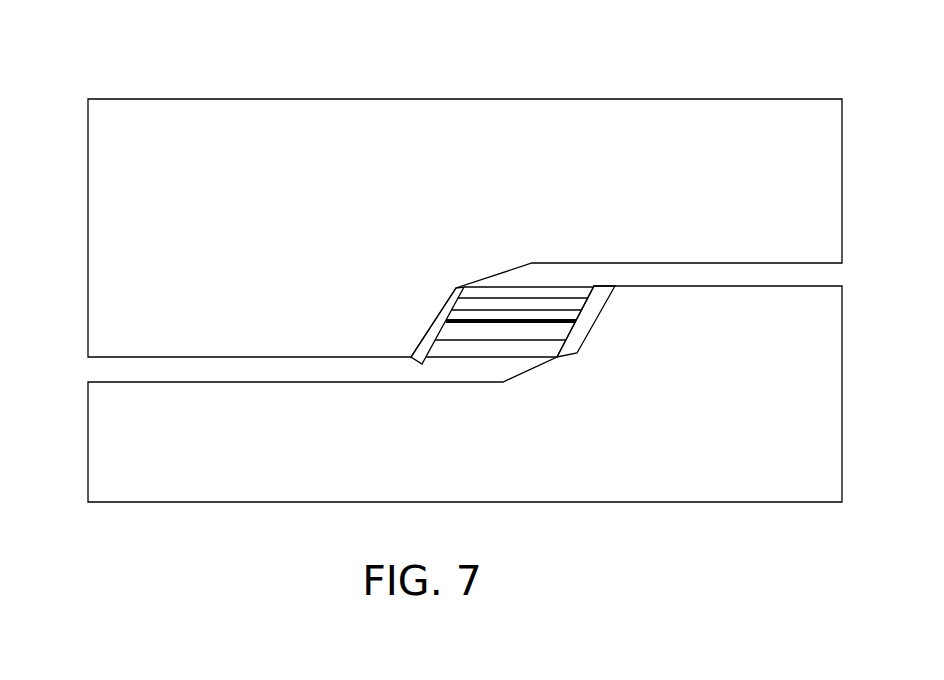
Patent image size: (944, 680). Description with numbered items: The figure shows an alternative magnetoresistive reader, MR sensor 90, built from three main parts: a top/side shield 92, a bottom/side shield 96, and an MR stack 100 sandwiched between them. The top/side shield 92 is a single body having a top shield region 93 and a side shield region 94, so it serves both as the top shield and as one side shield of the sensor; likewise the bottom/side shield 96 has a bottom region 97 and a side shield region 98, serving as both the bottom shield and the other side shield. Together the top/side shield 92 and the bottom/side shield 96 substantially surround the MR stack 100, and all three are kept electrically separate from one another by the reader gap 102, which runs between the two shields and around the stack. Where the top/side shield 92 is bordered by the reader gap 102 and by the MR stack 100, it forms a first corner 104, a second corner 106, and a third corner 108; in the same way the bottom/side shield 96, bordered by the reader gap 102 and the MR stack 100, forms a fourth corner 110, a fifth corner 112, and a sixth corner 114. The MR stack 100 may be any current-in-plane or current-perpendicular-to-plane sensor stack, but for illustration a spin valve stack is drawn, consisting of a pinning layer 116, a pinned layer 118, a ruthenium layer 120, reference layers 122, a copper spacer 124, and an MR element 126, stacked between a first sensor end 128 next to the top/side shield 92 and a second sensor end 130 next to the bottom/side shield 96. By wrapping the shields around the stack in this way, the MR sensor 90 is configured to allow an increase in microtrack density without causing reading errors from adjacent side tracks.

The MR sensor 90 is at (147, 82).
The top/side shield 92 is at (270, 99).
The top shield region 93 is at (722, 157).
The side shield region 94 is at (285, 312).
The bottom/side shield 96 is at (635, 502).
The bottom region 97 is at (517, 463).
The side shield region 98 is at (703, 326).
The MR stack 100 is at (536, 338).
The reader gap 102 is at (832, 275).
The first corner 104 is at (411, 354).
The second corner 106 is at (457, 287).
The third corner 108 is at (532, 262).
The fourth corner 110 is at (616, 287).
The fifth corner 112 is at (557, 357).
The sixth corner 114 is at (503, 382).
The pinning layer 116 is at (442, 352).
The pinned layer 118 is at (478, 332).
The ruthenium layer 120 is at (498, 320).
The reference layers 122 is at (507, 311).
The copper spacer 124 is at (548, 302).
The MR element 126 is at (578, 290).
The first sensor end 128 is at (442, 318).
The second sensor end 130 is at (590, 326).